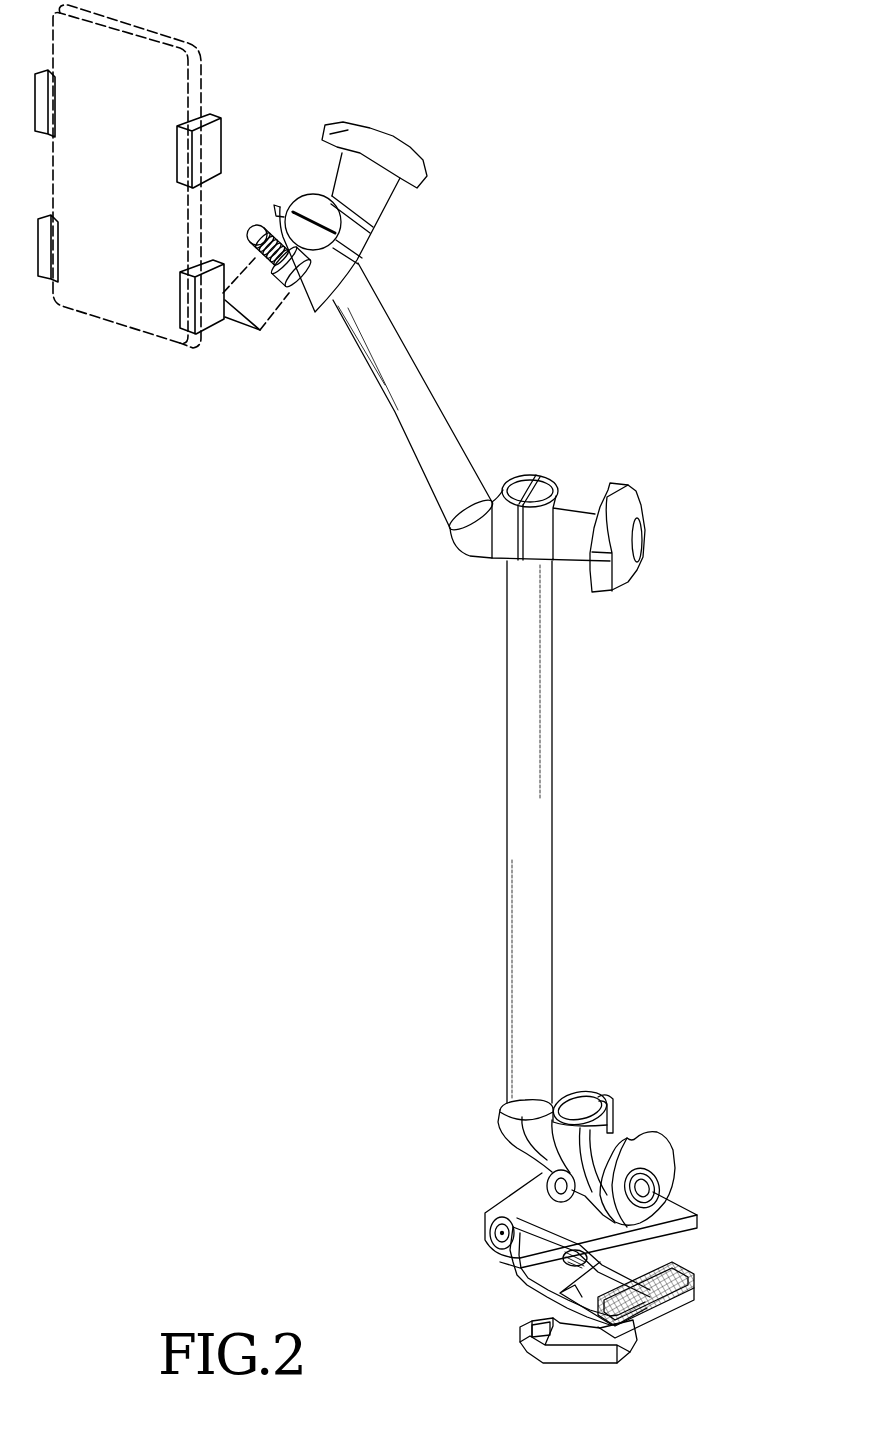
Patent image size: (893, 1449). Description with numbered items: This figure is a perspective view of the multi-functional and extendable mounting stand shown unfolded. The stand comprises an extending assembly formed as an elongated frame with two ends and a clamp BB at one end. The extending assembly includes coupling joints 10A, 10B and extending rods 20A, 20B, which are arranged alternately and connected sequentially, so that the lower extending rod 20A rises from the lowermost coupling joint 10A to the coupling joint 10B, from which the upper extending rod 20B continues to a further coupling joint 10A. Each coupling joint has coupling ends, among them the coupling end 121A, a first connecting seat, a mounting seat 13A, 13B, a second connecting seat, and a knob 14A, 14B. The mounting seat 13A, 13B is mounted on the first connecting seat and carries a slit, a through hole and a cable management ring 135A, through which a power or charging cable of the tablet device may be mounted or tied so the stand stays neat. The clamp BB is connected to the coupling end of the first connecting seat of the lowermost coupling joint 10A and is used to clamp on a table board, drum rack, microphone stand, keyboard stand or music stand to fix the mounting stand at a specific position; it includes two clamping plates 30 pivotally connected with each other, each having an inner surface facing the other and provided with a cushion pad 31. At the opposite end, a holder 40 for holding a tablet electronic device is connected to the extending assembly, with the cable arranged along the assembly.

The coupling joint 10A is at (515, 642).
The coupling joint 10B is at (568, 494).
The coupling end 121A is at (273, 240).
The mounting seat 13A is at (363, 233).
The mounting seat 13B is at (500, 537).
The cable management ring 135A is at (613, 1117).
The knob 14A is at (667, 1163).
The knob 14B is at (632, 512).
The extending rod 20A is at (533, 838).
The extending rod 20B is at (397, 358).
The clamping plate 30 is at (677, 1220).
The cushion pad 31 is at (673, 1280).
The holder 40 is at (275, 320).
The clamp BB is at (559, 1266).